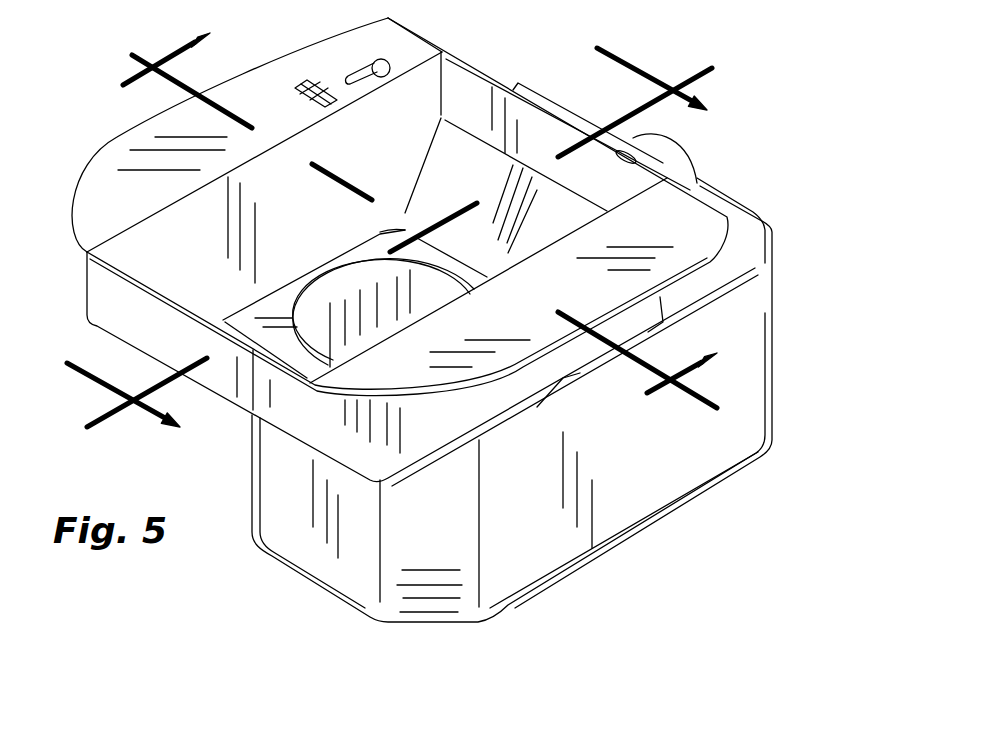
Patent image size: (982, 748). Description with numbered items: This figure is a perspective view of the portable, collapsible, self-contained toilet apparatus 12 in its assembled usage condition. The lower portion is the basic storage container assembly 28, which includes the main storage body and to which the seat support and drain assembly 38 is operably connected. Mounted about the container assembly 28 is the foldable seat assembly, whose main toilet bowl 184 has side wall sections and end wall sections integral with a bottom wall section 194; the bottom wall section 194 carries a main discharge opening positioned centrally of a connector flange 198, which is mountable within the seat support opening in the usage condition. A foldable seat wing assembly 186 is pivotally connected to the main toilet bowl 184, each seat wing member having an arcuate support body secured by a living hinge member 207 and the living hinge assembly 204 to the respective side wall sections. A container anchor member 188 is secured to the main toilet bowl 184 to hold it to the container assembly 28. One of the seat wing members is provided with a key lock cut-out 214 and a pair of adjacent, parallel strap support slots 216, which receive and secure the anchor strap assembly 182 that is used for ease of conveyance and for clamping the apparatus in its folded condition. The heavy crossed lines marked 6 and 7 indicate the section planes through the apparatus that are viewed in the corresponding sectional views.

The portable, collapsible, self-contained toilet apparatus 12 is at (778, 83).
The basic storage container assembly 28 is at (780, 378).
The seat support and drain assembly 38 is at (683, 165).
The anchor strap assembly 182 is at (302, 80).
The main toilet bowl 184 is at (150, 250).
The foldable seat wing assembly 186 is at (285, 72).
The container anchor member 188 is at (550, 102).
The bottom wall section 194 is at (193, 270).
The connector flange 198 is at (380, 283).
The living hinge assembly 204 is at (442, 26).
The living hinge member 207 is at (163, 207).
The key lock cut-out 214 is at (385, 84).
The strap support slots 216 is at (308, 100).
The section line 6- 6 is at (379, 228).
The section line 7- 7 is at (420, 227).